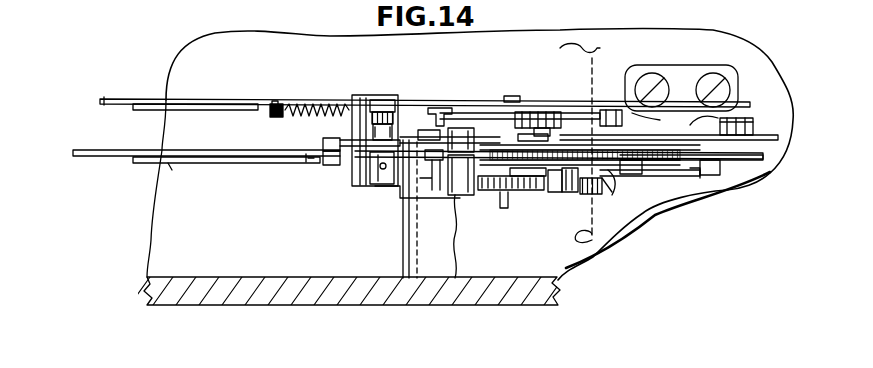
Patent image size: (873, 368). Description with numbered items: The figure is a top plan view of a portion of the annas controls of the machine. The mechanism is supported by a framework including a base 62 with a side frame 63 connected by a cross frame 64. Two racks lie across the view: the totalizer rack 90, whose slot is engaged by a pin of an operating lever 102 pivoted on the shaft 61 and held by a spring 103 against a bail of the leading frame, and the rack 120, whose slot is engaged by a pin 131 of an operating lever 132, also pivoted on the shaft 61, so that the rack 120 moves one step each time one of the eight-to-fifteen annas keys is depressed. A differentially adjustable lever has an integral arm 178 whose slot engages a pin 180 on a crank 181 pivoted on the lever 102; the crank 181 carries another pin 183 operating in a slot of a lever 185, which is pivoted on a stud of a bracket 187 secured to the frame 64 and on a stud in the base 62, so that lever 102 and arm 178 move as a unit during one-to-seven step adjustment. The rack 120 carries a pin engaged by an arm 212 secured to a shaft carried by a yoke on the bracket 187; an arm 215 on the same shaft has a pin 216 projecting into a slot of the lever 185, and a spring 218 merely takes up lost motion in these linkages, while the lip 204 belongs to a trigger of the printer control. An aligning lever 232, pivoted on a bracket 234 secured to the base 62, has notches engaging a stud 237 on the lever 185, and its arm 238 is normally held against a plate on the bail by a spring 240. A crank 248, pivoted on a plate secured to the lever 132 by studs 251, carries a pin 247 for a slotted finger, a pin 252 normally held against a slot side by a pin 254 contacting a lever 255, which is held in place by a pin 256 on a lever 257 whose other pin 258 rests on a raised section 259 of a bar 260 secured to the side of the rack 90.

The shaft 61 is at (600, 48).
The base 62 is at (152, 212).
The side frame 63 is at (144, 288).
The cross frame 64 is at (403, 265).
The rack 90 is at (125, 149).
The operating lever 102 is at (590, 200).
The spring 103 is at (503, 198).
The rack 120 is at (145, 96).
The pin 131 is at (510, 96).
The operating lever 132 is at (498, 117).
The arm 178 is at (510, 202).
The pin 180 is at (500, 198).
The crank 181 is at (513, 195).
The pin 183 is at (557, 195).
The lever 185 is at (612, 196).
The bracket 187 is at (372, 190).
The lip 204 is at (346, 104).
The arm 212 is at (398, 76).
The arm 215 is at (372, 172).
The pin 216 is at (419, 203).
The spring 218 is at (293, 84).
The lever 232 is at (712, 173).
The bracket 234 is at (775, 170).
The stud 237 is at (680, 176).
The arm 238 is at (681, 100).
The spring 240 is at (748, 118).
The pin 247 is at (610, 140).
The crank 248 is at (548, 140).
The studs 251 is at (592, 140).
The pin 252 is at (628, 172).
The pin 254 is at (544, 134).
The lever 255 is at (478, 128).
The pin 256 is at (425, 130).
The lever 257 is at (343, 138).
The pin 258 is at (322, 143).
The raised section 259 is at (320, 164).
The bar 260 is at (173, 166).